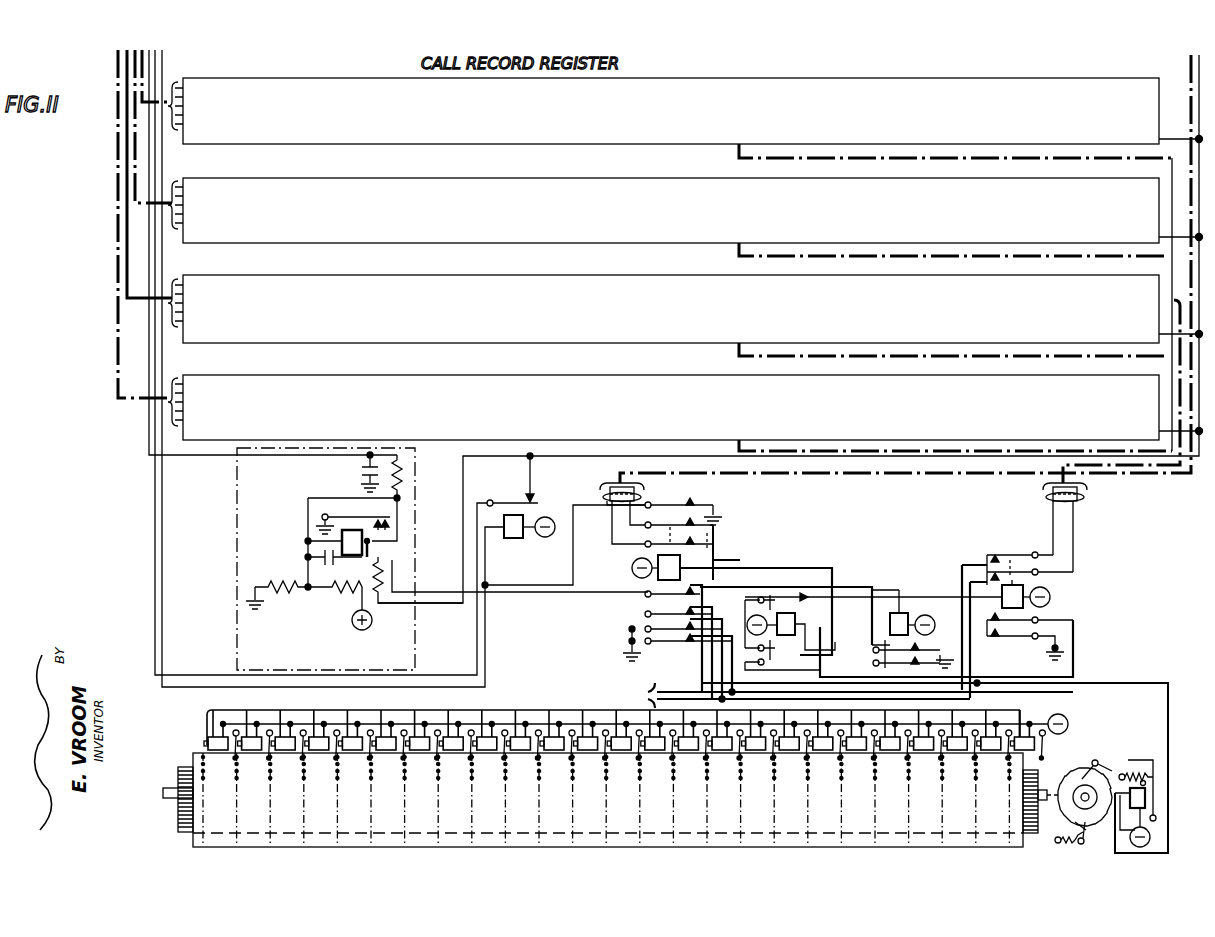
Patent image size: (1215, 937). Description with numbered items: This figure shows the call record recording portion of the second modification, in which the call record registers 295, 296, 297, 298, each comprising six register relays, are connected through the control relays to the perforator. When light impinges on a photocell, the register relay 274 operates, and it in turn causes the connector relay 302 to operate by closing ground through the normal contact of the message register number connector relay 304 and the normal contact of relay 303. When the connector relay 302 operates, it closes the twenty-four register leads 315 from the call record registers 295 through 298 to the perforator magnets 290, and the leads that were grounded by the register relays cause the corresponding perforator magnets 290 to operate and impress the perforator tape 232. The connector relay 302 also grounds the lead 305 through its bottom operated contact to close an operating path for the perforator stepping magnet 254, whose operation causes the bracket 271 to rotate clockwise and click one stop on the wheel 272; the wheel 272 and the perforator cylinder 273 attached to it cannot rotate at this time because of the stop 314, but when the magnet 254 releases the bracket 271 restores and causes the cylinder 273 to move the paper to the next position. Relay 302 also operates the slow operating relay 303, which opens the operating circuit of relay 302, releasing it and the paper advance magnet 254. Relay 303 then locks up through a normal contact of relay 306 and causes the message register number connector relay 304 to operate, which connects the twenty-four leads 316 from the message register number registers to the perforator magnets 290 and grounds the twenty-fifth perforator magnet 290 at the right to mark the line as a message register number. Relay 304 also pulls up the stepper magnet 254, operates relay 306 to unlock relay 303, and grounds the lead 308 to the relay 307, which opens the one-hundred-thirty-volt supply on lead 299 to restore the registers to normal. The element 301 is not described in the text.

The call record register 295 is at (198, 84).
The call record register 296 is at (198, 184).
The call record register 297 is at (198, 281).
The call record register 298 is at (198, 381).
The lead 299 is at (162, 541).
The register relay 274 is at (352, 530).
The resistor network 301 is at (308, 592).
The relay 307 is at (513, 539).
The lead 308 is at (573, 574).
The leads 316 is at (637, 498).
The message register number connector relay 304 is at (658, 580).
The slow operating relay 303 is at (788, 613).
The relay 306 is at (899, 613).
The connector relay 302 is at (1012, 585).
The register leads 315 is at (1077, 498).
The lead 305 is at (1098, 690).
The perforator magnets 290 is at (207, 742).
The perforator tape 232 is at (193, 838).
The perforator cylinder 273 is at (1030, 835).
The wheel 272 is at (1088, 824).
The stop 314 is at (1076, 825).
The perforator stepping magnet 254 is at (1125, 770).
The bracket 271 is at (1156, 785).